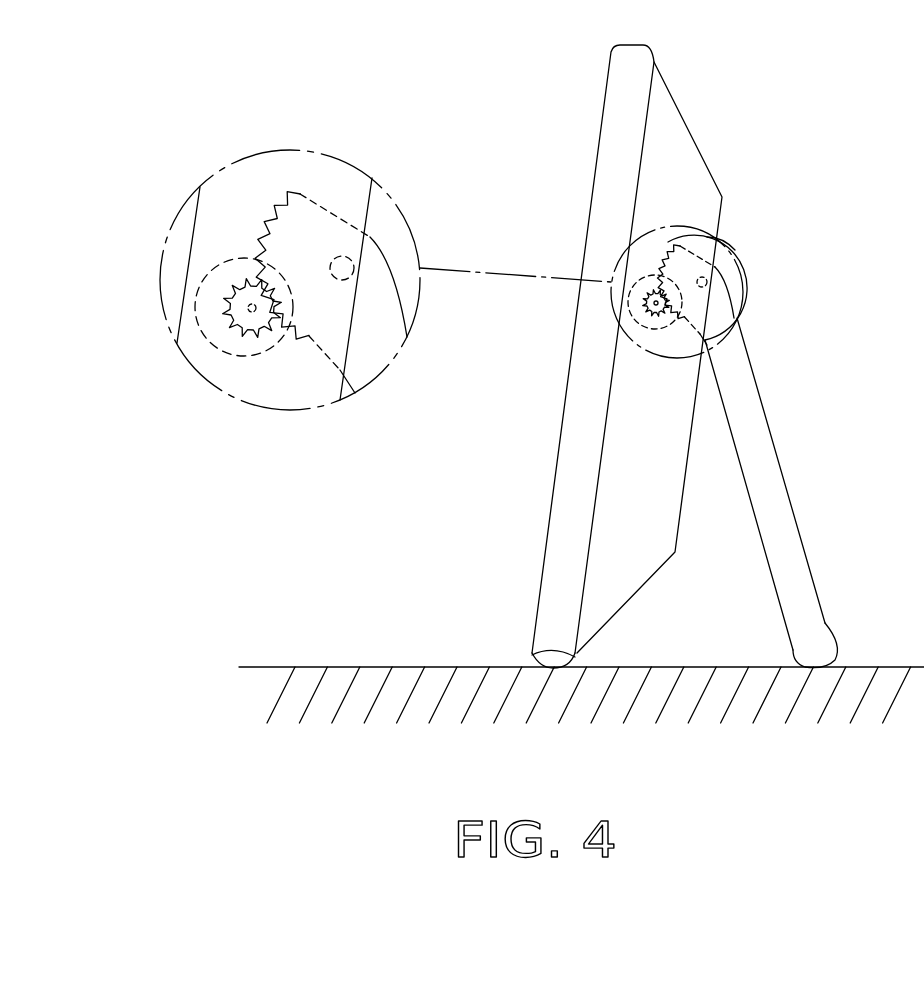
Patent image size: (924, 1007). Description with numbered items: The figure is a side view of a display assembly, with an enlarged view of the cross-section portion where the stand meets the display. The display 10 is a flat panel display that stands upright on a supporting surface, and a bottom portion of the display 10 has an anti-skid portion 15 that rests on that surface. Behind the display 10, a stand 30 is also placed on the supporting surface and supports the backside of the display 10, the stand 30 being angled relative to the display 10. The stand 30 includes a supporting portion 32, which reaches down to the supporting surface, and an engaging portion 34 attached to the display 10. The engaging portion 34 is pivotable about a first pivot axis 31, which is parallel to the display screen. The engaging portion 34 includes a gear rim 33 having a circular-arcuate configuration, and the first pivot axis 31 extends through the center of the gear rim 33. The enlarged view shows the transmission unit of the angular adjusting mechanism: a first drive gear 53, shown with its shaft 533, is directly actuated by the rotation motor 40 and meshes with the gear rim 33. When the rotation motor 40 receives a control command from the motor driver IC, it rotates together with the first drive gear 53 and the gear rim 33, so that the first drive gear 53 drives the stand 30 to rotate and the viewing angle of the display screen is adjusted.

The display 10 is at (672, 137).
The anti-skid portion 15 is at (553, 660).
The stand 30 is at (737, 398).
The first pivot axis 31 is at (707, 282).
The supporting portion 32 is at (787, 552).
The gear rim 33 is at (717, 237).
The engaging portion 34 is at (717, 305).
The rotation motor 40 is at (223, 337).
The first drive gear 53 is at (250, 328).
The gear shaft 533 is at (250, 308).